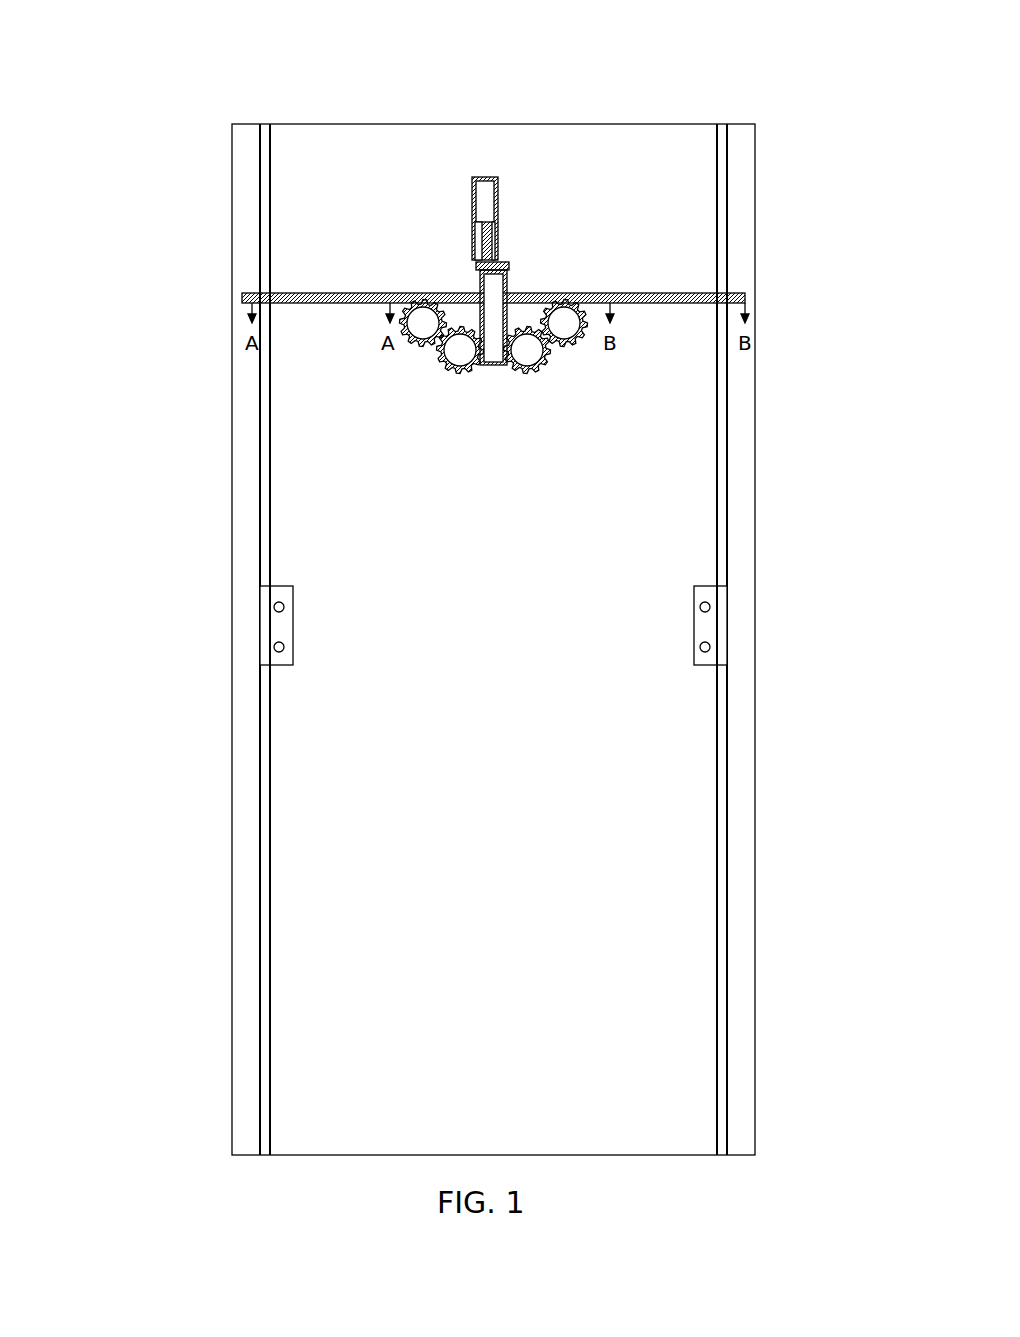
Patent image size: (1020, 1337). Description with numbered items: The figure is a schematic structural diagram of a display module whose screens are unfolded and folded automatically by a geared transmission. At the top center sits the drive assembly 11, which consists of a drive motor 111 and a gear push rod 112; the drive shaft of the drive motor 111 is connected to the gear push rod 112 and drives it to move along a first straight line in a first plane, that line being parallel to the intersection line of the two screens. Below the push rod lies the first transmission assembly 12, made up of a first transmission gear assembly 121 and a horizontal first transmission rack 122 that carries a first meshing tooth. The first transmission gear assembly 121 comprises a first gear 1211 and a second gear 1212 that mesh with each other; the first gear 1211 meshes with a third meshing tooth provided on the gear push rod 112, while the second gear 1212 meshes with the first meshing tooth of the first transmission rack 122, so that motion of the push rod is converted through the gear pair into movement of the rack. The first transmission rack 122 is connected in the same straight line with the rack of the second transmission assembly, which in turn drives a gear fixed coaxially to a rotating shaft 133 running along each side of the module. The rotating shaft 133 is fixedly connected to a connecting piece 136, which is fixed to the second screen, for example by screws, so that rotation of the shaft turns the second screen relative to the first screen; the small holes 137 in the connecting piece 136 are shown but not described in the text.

The drive assembly 11 is at (573, 185).
The drive motor 111 is at (498, 193).
The gear push rod 112 is at (513, 263).
The first transmission assembly 12 is at (499, 424).
The first transmission gear assembly 121 is at (499, 428).
The first gear 1211 is at (447, 365).
The second gear 1212 is at (413, 340).
The first transmission rack 122 is at (390, 305).
The rotating shaft 133 is at (260, 742).
The connecting piece 136 is at (495, 676).
The mounting hole 137 is at (272, 615).